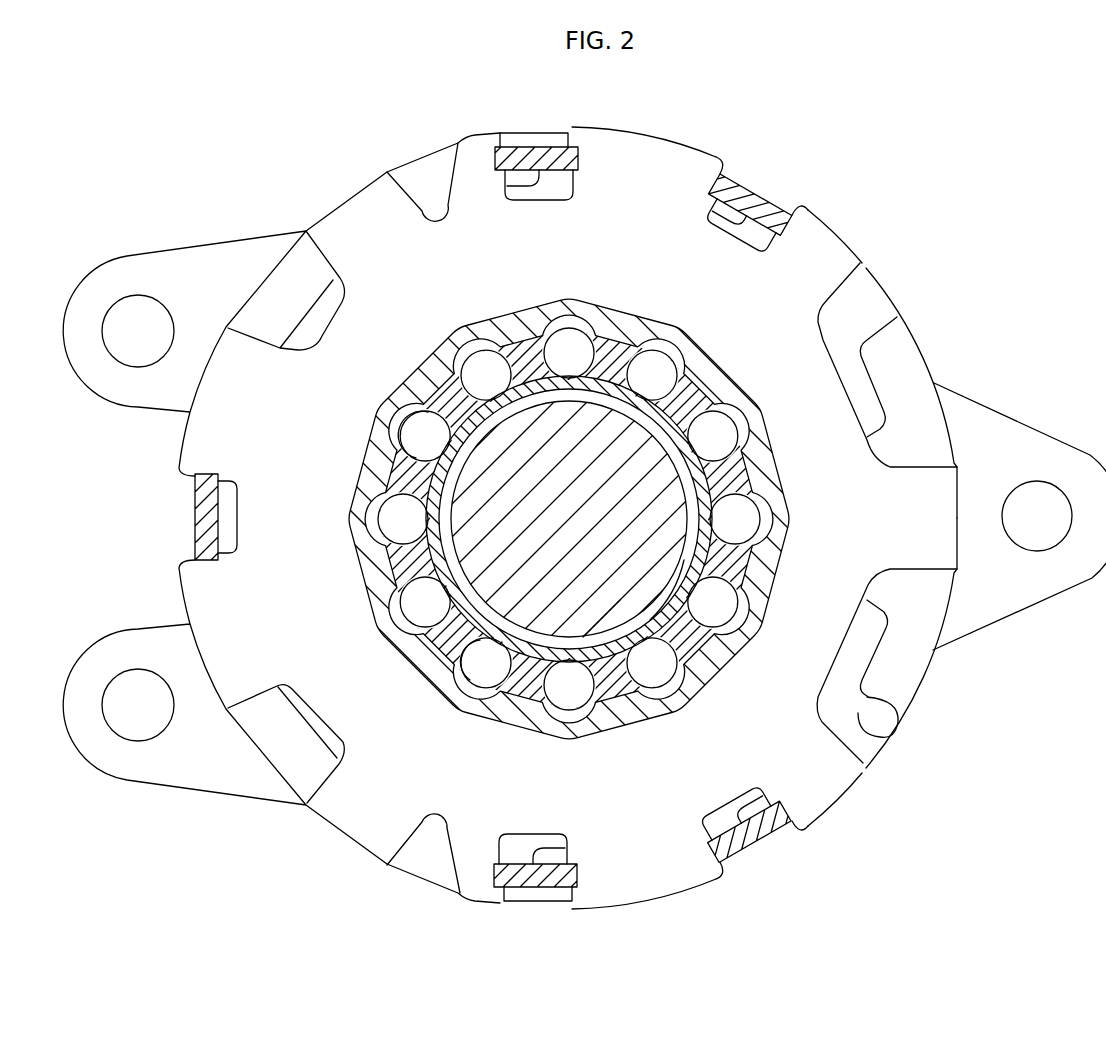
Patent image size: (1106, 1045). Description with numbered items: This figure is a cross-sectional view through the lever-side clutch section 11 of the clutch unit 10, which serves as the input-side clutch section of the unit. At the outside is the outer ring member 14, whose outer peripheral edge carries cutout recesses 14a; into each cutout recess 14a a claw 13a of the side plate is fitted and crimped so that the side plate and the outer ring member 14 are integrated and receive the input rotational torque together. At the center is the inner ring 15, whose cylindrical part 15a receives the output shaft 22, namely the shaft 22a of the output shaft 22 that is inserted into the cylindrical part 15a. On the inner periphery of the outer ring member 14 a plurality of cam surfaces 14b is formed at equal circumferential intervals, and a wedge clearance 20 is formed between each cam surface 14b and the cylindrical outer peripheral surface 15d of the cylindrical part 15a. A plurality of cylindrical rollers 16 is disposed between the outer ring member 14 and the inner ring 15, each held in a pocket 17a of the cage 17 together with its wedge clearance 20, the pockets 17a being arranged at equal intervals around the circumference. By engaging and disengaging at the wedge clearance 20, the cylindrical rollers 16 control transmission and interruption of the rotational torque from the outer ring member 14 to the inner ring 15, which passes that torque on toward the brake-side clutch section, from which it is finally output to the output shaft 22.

The clutch unit 10 is at (910, 185).
The lever-side clutch section 11 is at (500, 125).
The claw 13a is at (555, 155).
The outer ring member 14 is at (828, 345).
The cutout recess 14a is at (527, 198).
The cam surface 14b is at (480, 680).
The inner ring 15 is at (473, 577).
The cylindrical part 15a is at (630, 410).
The outer peripheral surface 15d is at (697, 465).
The cylindrical roller 16 is at (740, 432).
The cage 17 is at (418, 558).
The pocket 17a is at (417, 420).
The wedge clearance 20 is at (483, 355).
The output shaft 22 is at (662, 598).
The shaft 22a is at (596, 596).